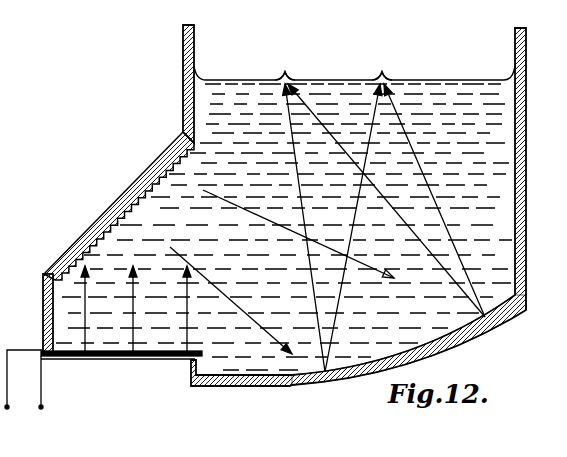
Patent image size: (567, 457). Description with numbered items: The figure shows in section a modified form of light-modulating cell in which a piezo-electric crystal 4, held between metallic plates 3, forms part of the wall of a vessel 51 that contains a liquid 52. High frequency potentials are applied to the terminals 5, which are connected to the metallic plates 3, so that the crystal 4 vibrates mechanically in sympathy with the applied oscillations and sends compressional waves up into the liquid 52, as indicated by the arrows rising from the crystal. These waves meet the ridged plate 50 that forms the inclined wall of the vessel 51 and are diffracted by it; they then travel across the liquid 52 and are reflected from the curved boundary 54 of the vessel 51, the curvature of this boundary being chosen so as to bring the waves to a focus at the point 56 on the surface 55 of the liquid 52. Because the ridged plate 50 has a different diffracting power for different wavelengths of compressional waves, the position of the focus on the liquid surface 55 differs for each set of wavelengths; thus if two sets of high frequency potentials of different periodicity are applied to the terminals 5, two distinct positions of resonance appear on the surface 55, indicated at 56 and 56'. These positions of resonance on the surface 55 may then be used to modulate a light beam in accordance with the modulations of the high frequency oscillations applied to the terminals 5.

The metallic plates 3 is at (78, 358).
The piezo-electric crystal 4 is at (130, 358).
The terminals 5 is at (41, 407).
The ridged plate 50 is at (157, 168).
The vessel 51 is at (195, 46).
The liquid 52 is at (495, 197).
The curved boundary 54 is at (325, 380).
The surface of the liquid 55 is at (450, 80).
The point of focus 56 is at (405, 210).
The position of resonance 56' is at (380, 209).